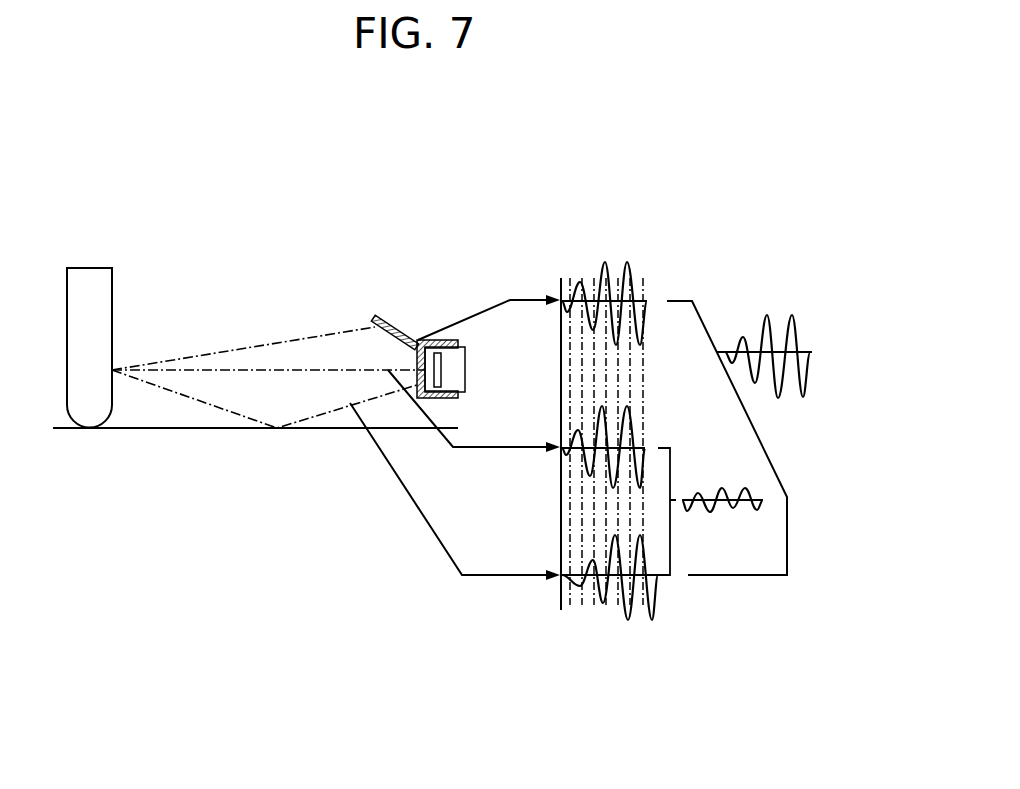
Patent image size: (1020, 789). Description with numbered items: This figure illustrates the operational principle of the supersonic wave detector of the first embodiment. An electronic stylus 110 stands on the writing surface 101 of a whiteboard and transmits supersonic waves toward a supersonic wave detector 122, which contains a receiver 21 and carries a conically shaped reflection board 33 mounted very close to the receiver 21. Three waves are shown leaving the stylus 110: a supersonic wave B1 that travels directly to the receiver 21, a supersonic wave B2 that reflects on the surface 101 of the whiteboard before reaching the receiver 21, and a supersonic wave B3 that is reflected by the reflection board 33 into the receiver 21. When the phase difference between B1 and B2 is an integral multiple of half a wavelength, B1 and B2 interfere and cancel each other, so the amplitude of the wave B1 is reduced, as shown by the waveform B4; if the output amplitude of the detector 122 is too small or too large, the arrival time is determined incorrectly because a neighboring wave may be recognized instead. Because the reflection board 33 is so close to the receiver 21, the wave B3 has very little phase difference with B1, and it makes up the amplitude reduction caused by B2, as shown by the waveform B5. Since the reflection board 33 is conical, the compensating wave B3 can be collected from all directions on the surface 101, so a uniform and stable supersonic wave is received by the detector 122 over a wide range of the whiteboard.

The electronic stylus 110 is at (113, 322).
The surface of the whiteboard 101 is at (137, 432).
The reflection board 33 is at (385, 323).
The supersonic wave detector 122 is at (458, 353).
The receiver 21 is at (442, 368).
The supersonic wave directly transmitted B1 is at (516, 429).
The supersonic wave reflected on the surface B2 is at (504, 511).
The supersonic wave reflected by the reflection board B3 is at (532, 303).
The reduced-amplitude supersonic wave B4 is at (715, 512).
The compensated supersonic wave B5 is at (795, 328).